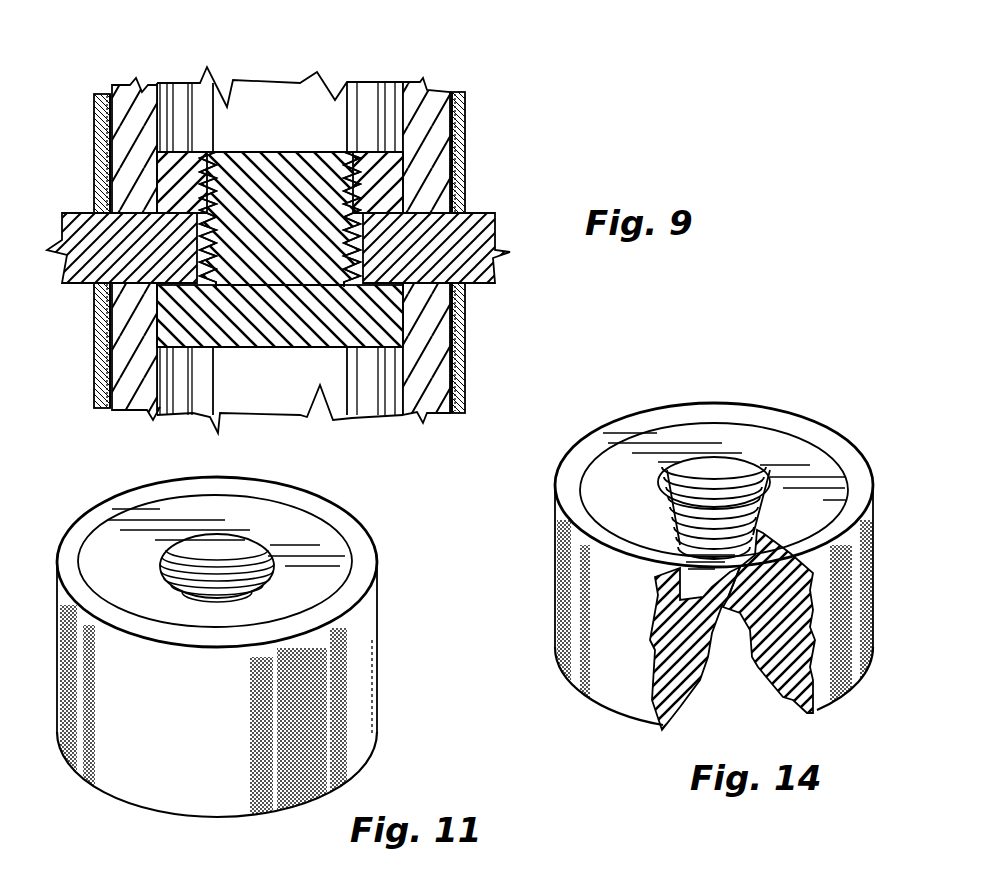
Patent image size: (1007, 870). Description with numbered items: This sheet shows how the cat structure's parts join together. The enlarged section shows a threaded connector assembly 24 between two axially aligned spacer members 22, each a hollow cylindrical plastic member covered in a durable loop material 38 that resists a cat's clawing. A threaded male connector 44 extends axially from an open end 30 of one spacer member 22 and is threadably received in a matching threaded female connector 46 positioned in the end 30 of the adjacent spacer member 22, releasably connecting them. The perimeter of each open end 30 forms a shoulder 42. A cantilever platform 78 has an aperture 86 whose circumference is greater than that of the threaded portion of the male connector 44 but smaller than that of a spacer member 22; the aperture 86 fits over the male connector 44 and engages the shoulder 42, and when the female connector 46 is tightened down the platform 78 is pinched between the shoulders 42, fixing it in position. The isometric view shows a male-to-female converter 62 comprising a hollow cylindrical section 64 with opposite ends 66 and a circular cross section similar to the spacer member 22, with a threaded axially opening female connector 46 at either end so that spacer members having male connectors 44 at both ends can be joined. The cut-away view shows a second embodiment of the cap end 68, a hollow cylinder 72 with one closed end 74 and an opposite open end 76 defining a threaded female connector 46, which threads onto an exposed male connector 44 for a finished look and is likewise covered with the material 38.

In FIG. 9, the spacer member 22 is at (93, 108).
In FIG. 9, the threaded connector assembly 24 is at (292, 148).
In FIG. 9, the open end 30 is at (120, 205).
In FIG. 14, the durable material 38 is at (627, 655).
In FIG. 9, the shoulder 42 is at (105, 203).
In FIG. 9, the threaded male connector 44 is at (243, 147).
In FIG. 9, the threaded female connector 46 is at (200, 157).
In FIG. 11, the threaded female connector 46 is at (270, 560).
In FIG. 14, the threaded female connector 46 is at (695, 462).
In FIG. 11, the male-to-female converter 62 is at (337, 573).
In FIG. 11, the hollow cylindrical section 64 is at (205, 545).
In FIG. 11, the opposite ends 66 is at (118, 527).
In FIG. 14, the cap end 68 is at (798, 417).
In FIG. 14, the hollow cylinder 72 is at (750, 457).
In FIG. 14, the closed end 74 is at (717, 660).
In FIG. 14, the open end 76 is at (810, 455).
In FIG. 9, the cantilever platform 78 is at (477, 213).
In FIG. 9, the aperture 86 is at (360, 260).